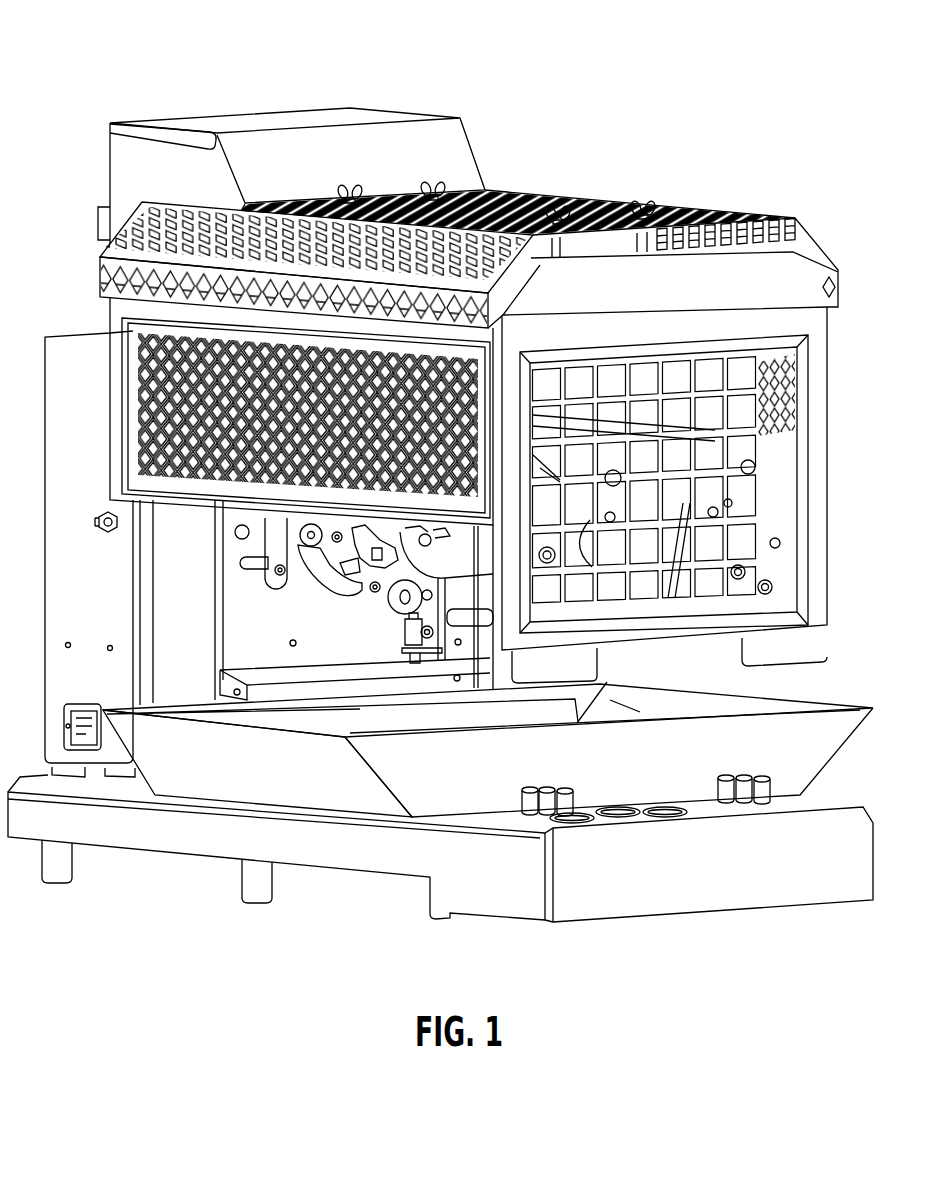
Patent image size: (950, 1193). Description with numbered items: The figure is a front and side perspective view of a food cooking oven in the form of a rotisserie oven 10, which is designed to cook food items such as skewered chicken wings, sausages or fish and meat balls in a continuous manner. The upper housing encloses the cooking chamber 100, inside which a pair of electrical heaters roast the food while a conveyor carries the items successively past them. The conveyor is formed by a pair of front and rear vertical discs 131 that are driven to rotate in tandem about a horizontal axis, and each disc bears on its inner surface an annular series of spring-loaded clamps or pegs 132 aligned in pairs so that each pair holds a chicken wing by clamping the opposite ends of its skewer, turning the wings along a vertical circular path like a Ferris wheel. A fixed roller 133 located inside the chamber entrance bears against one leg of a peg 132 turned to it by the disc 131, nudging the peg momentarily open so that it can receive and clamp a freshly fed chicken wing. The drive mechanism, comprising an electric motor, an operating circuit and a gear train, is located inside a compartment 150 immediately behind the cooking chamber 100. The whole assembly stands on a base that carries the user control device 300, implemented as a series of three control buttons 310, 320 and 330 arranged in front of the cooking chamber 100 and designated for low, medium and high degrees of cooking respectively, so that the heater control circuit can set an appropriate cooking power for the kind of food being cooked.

The rotisserie oven 10 is at (80, 80).
The cooking chamber 100 is at (268, 612).
The vertical discs 131 is at (348, 595).
The clamps or pegs 132 is at (361, 583).
The fixed roller 133 is at (396, 603).
The compartment 150 is at (85, 370).
The user control device 300 is at (752, 846).
The control button 310 is at (588, 823).
The control button 320 is at (635, 817).
The control button 330 is at (688, 817).